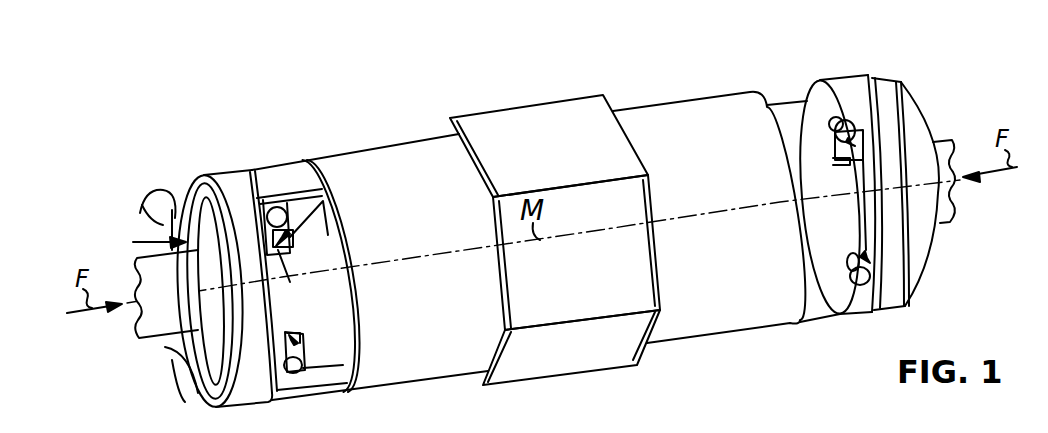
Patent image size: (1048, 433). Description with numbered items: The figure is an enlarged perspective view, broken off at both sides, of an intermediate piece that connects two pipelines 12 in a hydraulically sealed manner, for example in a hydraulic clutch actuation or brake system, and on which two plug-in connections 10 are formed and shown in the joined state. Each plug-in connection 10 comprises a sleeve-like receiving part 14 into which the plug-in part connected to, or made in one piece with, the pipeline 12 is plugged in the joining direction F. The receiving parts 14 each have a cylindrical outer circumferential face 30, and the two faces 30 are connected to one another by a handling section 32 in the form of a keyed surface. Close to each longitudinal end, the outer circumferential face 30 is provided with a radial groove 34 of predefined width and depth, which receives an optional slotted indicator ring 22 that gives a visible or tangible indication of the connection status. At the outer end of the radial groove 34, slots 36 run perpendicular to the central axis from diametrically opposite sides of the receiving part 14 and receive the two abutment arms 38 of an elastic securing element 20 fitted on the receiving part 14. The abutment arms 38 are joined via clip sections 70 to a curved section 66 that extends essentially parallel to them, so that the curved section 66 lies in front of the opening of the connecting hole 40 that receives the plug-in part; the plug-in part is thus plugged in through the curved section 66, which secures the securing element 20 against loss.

The plug-in connection 10 is at (297, 133).
The pipeline 12 is at (157, 323).
The receiving part 14 is at (369, 168).
The securing element 20 is at (150, 196).
The indicator ring 22 is at (253, 160).
The cylindrical outer circumferential face 30 is at (478, 352).
The handling section 32 is at (596, 356).
The radial groove 34 is at (320, 355).
The slot 36 is at (295, 235).
The abutment arm 38 is at (870, 258).
The connecting hole 40 is at (141, 245).
The curved section 66 is at (195, 398).
The clip section 70 is at (150, 215).